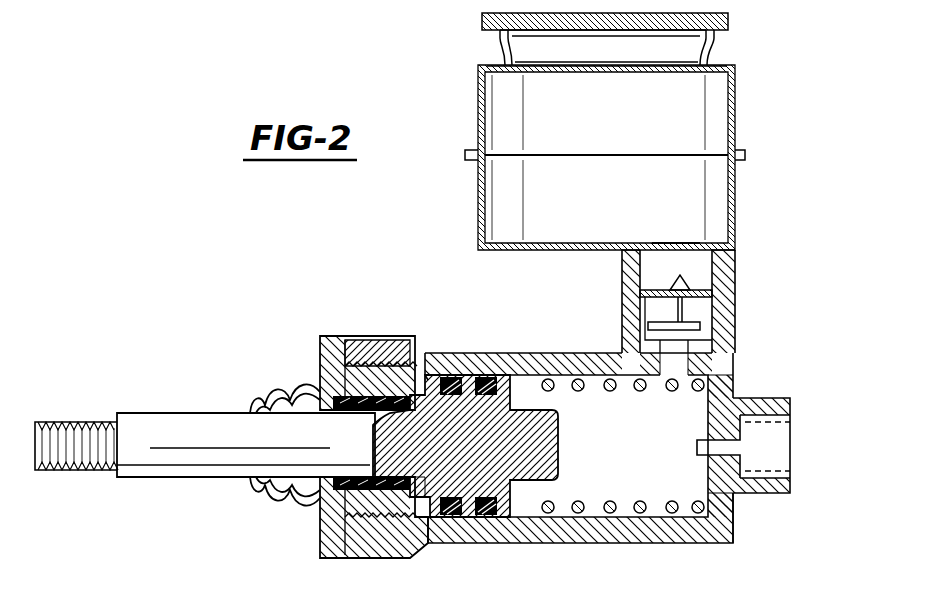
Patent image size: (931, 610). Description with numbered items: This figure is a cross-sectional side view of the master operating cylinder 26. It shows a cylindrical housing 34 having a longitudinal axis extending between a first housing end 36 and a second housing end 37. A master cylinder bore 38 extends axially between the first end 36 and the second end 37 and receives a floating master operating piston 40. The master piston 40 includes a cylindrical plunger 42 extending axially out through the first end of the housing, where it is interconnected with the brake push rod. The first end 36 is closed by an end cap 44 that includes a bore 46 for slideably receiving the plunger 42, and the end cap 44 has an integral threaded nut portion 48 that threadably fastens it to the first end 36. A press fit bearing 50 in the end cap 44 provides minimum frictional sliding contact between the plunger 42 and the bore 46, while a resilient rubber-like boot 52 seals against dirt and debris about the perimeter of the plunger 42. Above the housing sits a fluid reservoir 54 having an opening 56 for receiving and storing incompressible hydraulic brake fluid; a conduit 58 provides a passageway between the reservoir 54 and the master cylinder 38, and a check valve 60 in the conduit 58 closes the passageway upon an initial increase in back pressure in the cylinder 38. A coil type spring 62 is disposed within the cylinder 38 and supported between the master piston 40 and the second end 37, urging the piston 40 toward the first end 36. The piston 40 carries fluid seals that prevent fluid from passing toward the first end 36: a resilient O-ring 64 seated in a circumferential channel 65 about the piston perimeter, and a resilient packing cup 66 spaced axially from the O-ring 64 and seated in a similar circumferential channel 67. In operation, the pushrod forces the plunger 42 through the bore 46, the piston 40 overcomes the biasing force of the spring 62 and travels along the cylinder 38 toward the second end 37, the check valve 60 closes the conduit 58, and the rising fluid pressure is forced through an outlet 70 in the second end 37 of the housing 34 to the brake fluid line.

The master operating cylinder 26 is at (313, 290).
The cylindrical housing 34 is at (600, 545).
The first housing end 36 is at (350, 560).
The second housing end 37 is at (735, 512).
The master cylinder bore 38 is at (565, 378).
The master operating piston 40 is at (535, 520).
The cylindrical plunger 42 is at (190, 482).
The end cap 44 is at (320, 360).
The bore 46 is at (292, 508).
The threaded nut portion 48 is at (395, 345).
The press fit bearing 50 is at (378, 345).
The boot 52 is at (262, 397).
The fluid reservoir 54 is at (737, 98).
The opening 56 is at (730, 15).
The conduit 58 is at (735, 270).
The check valve 60 is at (700, 325).
The coil spring 62 is at (680, 525).
The O-ring 64 is at (432, 545).
The circumferential channel 65 is at (450, 378).
The packing cup 66 is at (482, 545).
The circumferential channel 67 is at (490, 378).
The outlet 70 is at (792, 447).